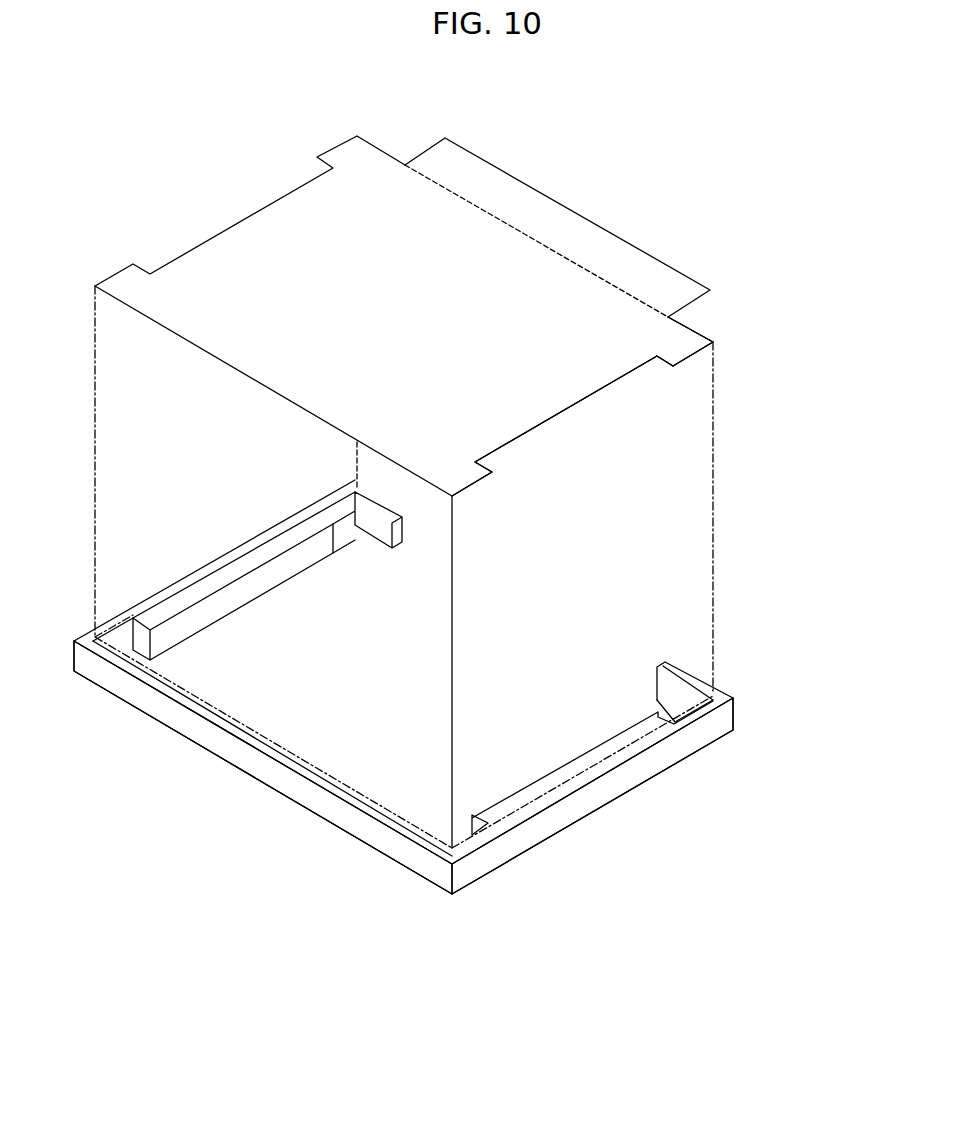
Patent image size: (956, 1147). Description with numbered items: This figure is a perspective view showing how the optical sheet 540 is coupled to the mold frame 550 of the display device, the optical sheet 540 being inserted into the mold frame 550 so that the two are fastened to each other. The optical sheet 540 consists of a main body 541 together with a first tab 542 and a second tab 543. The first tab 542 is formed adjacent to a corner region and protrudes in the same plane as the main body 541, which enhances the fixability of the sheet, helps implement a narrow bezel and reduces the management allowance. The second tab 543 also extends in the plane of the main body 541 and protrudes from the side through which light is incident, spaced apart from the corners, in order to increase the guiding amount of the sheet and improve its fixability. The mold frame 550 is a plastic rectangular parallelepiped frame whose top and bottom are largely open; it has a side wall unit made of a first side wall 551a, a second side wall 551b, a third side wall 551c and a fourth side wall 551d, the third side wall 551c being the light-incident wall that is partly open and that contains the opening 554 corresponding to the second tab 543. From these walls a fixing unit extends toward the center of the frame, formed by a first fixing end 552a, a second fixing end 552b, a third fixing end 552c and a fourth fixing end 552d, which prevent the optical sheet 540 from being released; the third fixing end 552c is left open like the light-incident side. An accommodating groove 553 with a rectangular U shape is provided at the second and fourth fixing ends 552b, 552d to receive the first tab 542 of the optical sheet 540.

The optical sheet 540 is at (584, 158).
The main body 541 is at (555, 403).
The first tab 542 is at (690, 343).
The second tab 543 is at (438, 158).
The mold frame 550 is at (505, 890).
The first side wall 551a is at (231, 746).
The second side wall 551b is at (213, 556).
The third side wall 551c is at (685, 665).
The fourth side wall 551d is at (563, 813).
The first fixing end 552a is at (291, 766).
The second fixing end 552b is at (262, 554).
The third fixing end 552c is at (703, 676).
The fourth fixing end 552d is at (588, 767).
The accommodating groove 553 is at (688, 708).
The opening 554 is at (542, 620).